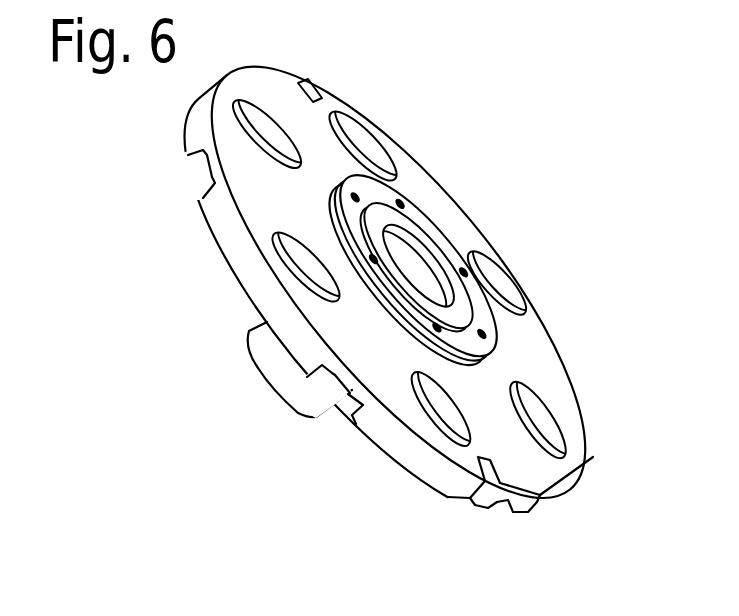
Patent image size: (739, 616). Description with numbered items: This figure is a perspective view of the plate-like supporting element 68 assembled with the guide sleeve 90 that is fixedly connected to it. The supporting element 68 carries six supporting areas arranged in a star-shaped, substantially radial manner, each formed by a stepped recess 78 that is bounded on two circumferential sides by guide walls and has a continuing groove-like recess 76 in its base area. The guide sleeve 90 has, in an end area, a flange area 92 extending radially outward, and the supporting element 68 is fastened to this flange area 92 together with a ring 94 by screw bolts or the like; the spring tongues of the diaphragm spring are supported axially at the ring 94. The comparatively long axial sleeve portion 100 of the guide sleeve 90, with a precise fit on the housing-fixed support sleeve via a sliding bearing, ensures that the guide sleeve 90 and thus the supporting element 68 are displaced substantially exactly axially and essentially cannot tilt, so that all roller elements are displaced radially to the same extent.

The supporting element 68 is at (541, 349).
The groove-like recess 76 is at (593, 457).
The stepped recess 78 is at (506, 523).
The guide sleeve 90 is at (257, 378).
The flange area 92 is at (383, 213).
The ring 94 is at (445, 241).
The sleeve portion 100 is at (303, 385).